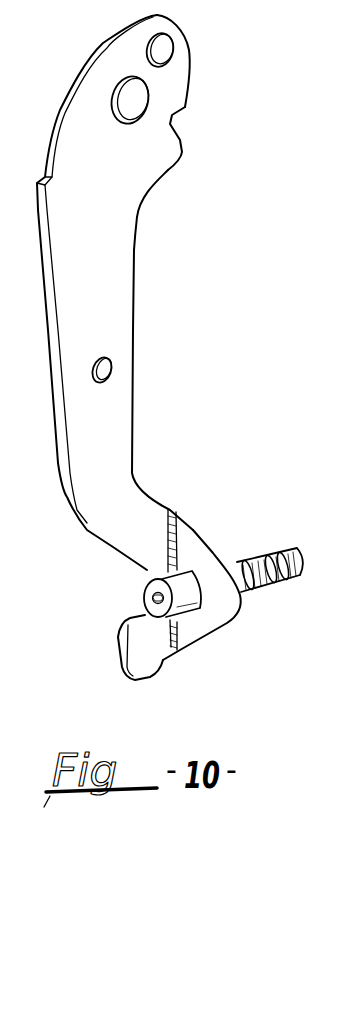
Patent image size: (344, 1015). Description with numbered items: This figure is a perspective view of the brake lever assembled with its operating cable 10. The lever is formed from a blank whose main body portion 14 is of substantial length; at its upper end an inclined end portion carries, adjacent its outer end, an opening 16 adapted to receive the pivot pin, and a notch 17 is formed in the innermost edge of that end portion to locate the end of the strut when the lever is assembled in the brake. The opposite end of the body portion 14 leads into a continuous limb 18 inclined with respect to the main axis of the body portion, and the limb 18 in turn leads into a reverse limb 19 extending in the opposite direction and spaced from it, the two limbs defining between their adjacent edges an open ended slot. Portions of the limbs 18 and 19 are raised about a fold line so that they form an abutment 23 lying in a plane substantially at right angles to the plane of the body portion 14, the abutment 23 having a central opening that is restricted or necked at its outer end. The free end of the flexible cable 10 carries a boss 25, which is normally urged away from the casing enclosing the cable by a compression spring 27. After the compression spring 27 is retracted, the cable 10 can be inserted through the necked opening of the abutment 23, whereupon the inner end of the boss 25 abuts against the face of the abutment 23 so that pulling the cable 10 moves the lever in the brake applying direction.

The cable 10 is at (288, 572).
The main body portion 14 is at (120, 317).
The opening 16 is at (166, 48).
The notch 17 is at (173, 125).
The limb 18 is at (183, 543).
The reverse limb 19 is at (192, 628).
The abutment 23 is at (222, 600).
The boss 25 is at (155, 597).
The compression spring 27 is at (272, 548).